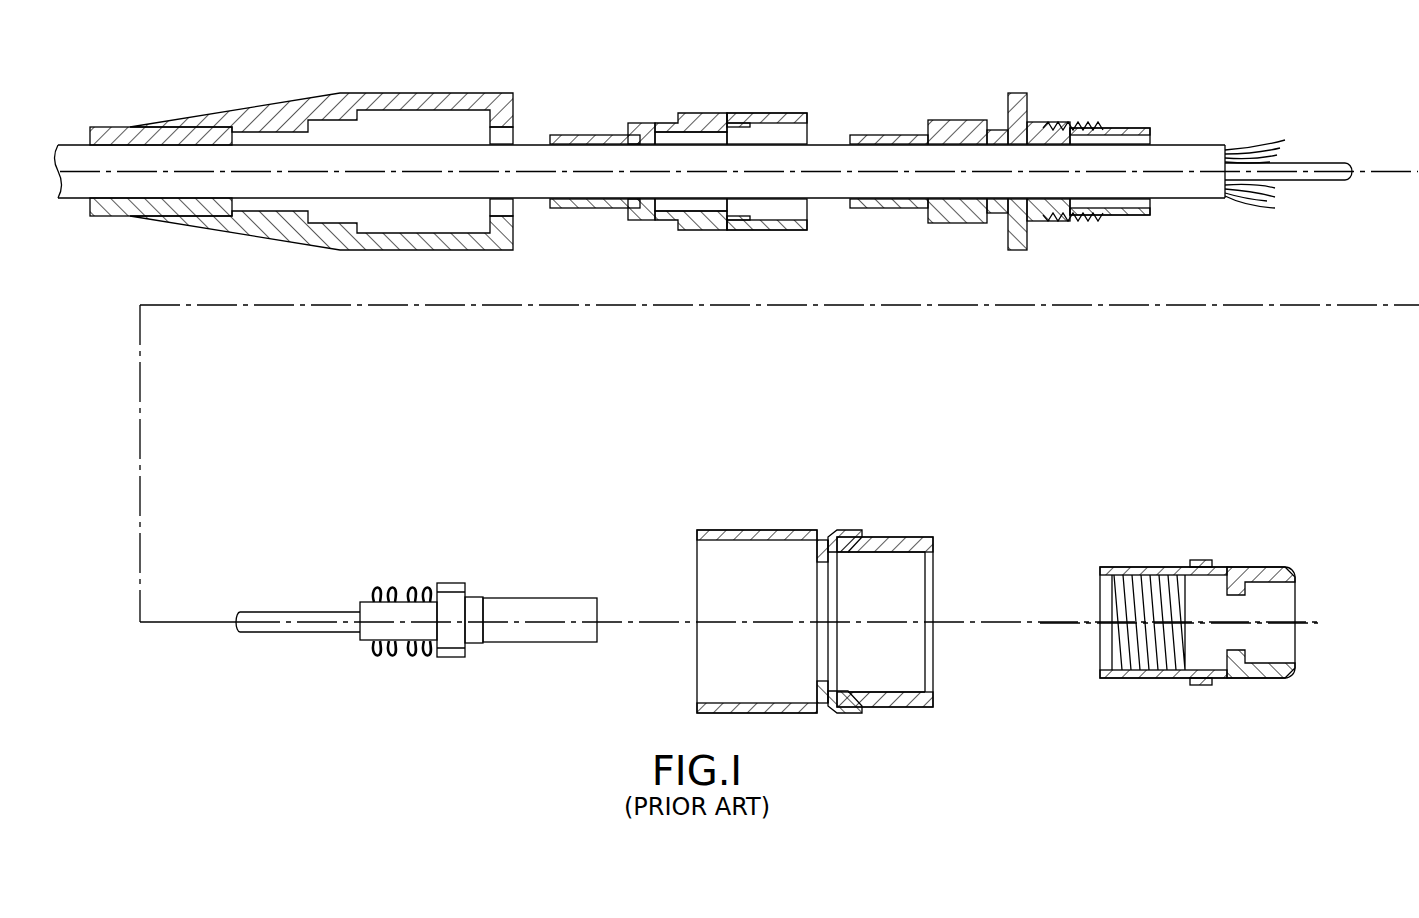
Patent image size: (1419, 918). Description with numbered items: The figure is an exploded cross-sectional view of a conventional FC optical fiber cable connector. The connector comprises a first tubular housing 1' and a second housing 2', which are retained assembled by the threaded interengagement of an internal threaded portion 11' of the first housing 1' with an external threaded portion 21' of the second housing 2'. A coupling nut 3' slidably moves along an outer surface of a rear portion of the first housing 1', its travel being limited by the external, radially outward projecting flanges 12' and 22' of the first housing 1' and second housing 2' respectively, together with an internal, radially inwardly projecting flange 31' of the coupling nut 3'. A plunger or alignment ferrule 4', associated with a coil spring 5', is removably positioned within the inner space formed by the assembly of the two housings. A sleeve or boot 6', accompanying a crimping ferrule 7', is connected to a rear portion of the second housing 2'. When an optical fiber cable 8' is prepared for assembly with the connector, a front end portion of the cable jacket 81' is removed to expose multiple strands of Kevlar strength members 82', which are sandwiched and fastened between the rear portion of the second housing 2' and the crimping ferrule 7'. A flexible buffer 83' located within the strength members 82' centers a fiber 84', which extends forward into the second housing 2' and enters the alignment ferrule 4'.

The first tubular housing 1' is at (1179, 595).
The internal threaded portion 11' is at (1120, 622).
The flange 12' is at (1204, 598).
The second housing 2' is at (1000, 149).
The external threaded portion 21' is at (1065, 148).
The flange 22' is at (1026, 150).
The coupling nut 3' is at (815, 603).
The flange 31' is at (835, 597).
The alignment ferrule 4' is at (416, 600).
The coil spring 5' is at (402, 596).
The boot 6' is at (301, 150).
The crimping ferrule 7' is at (678, 145).
The optical fiber cable 8' is at (737, 139).
The cable jacket 81' is at (1247, 144).
The strength members 82' is at (1272, 151).
The flexible buffer 83' is at (1291, 151).
The fiber 84' is at (1377, 151).